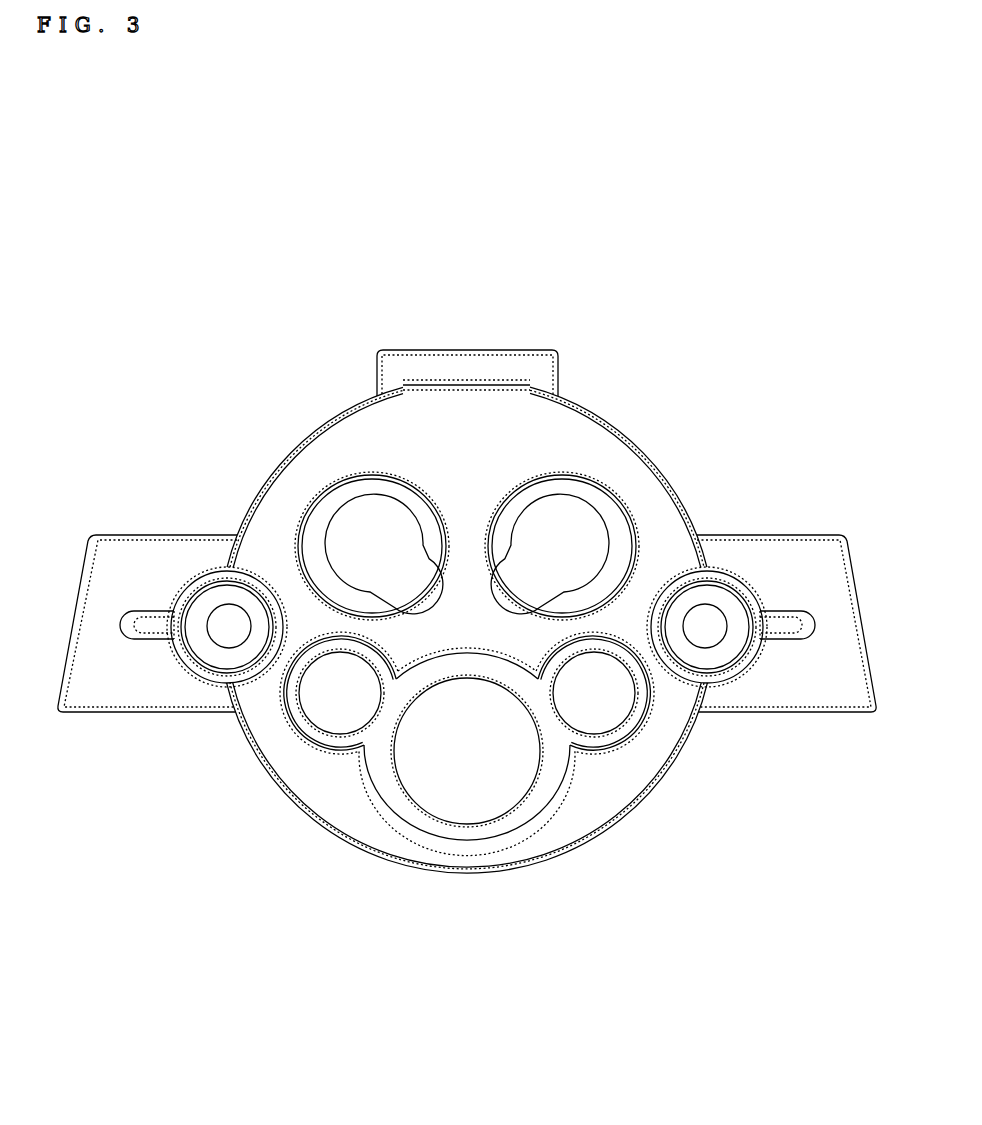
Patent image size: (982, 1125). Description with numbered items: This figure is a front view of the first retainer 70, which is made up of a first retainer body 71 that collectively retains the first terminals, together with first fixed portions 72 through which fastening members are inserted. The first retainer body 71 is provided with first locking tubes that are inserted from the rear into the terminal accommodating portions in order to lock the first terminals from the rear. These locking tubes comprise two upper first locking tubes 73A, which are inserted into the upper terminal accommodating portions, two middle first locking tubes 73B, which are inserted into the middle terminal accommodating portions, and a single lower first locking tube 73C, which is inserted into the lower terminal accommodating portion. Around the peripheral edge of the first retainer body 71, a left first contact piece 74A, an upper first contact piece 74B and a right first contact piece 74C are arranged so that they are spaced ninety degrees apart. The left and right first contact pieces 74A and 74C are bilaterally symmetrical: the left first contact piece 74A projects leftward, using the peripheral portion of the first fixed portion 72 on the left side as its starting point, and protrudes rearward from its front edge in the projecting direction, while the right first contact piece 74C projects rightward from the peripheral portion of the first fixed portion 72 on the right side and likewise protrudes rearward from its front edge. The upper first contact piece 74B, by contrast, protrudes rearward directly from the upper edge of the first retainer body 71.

The first retainer 70 is at (491, 236).
The first retainer body 71 is at (566, 420).
The first fixed portion 72 is at (213, 600).
The upper first locking tube 73A is at (350, 493).
The middle first locking tube 73B is at (302, 718).
The lower first locking tube 73C is at (472, 845).
The left first contact piece 74A is at (808, 548).
The upper first contact piece 74B is at (458, 358).
The right first contact piece 74C is at (118, 558).